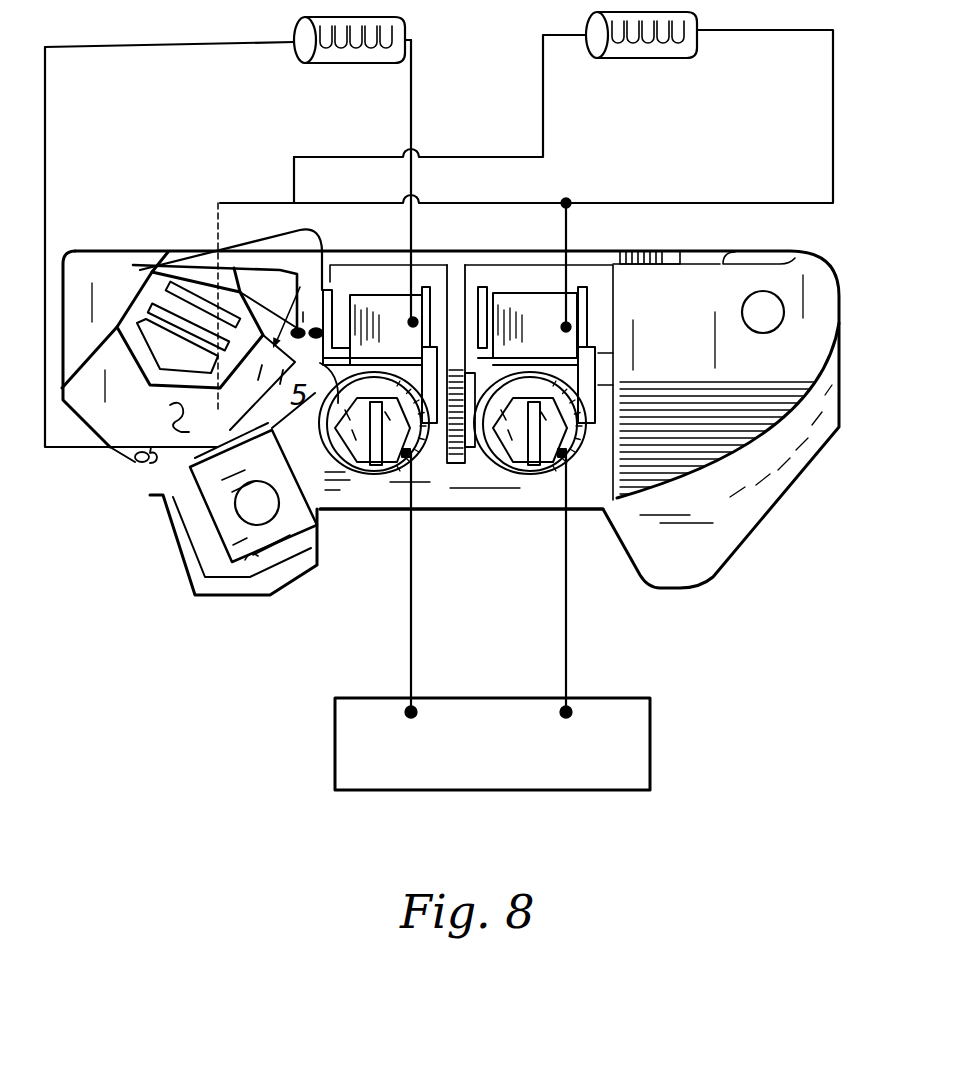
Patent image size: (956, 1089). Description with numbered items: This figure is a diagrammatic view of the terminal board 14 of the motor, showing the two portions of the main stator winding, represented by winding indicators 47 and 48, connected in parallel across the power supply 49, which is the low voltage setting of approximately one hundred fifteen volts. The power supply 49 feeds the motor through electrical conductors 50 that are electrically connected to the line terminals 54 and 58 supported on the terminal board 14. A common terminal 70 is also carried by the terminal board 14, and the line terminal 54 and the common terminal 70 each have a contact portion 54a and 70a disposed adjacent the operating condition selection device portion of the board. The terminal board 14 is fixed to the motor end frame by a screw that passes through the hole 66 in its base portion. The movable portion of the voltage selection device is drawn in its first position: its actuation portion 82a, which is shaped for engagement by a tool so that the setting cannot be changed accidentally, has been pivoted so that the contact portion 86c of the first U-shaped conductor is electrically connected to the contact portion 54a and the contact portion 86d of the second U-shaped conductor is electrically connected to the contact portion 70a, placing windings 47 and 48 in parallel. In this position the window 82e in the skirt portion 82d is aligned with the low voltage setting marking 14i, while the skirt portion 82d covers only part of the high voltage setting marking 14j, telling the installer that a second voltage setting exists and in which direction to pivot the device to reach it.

The terminal board 14 is at (725, 582).
The low voltage setting marking 14i is at (222, 234).
The high voltage setting marking 14j is at (130, 438).
The winding indicator 47 is at (362, 64).
The winding indicator 48 is at (643, 60).
The power supply 49 is at (475, 775).
The electrical conductors 50 is at (411, 572).
The line terminal 54 is at (398, 300).
The contact portion 54a is at (320, 337).
The line terminal 58 is at (520, 300).
The hole 66 is at (763, 291).
The common terminal 70 is at (300, 542).
The contact portion 70a is at (185, 502).
The actuation portion 82a is at (130, 292).
The skirt portion 82d is at (88, 450).
The window 82e is at (345, 512).
The contact portion 86c is at (316, 330).
The contact portion 86d is at (220, 452).